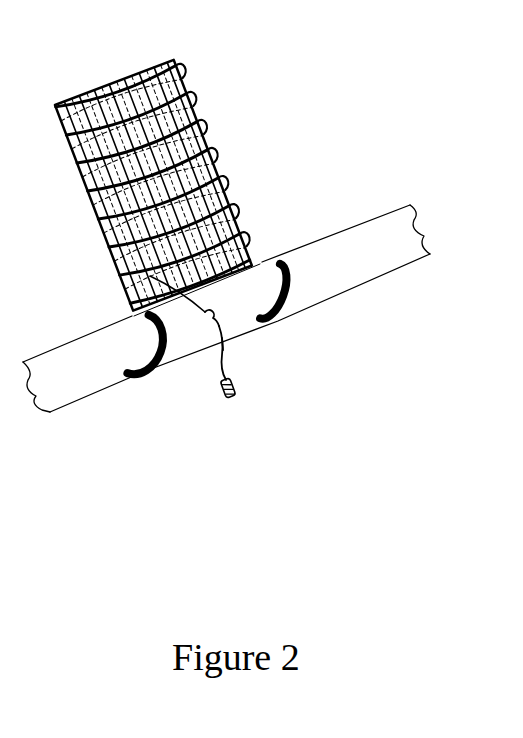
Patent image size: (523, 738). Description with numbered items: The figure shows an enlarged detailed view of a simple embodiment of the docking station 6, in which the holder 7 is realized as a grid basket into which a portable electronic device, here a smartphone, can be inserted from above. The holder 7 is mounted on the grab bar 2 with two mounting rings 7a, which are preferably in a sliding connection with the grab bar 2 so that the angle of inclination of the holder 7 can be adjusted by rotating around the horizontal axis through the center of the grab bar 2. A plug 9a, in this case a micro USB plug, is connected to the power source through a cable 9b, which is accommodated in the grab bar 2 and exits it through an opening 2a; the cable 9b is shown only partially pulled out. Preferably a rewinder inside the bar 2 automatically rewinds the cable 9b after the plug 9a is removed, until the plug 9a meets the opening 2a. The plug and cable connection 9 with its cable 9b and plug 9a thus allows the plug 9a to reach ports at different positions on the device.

The grab bar 2 is at (382, 242).
The opening 2a is at (158, 287).
The heating device 6 is at (299, 130).
The holder 7 is at (172, 112).
The mounting rings 7a is at (130, 313).
The cable 9 is at (205, 312).
The plug 9a is at (222, 393).
The cable 9b is at (231, 348).